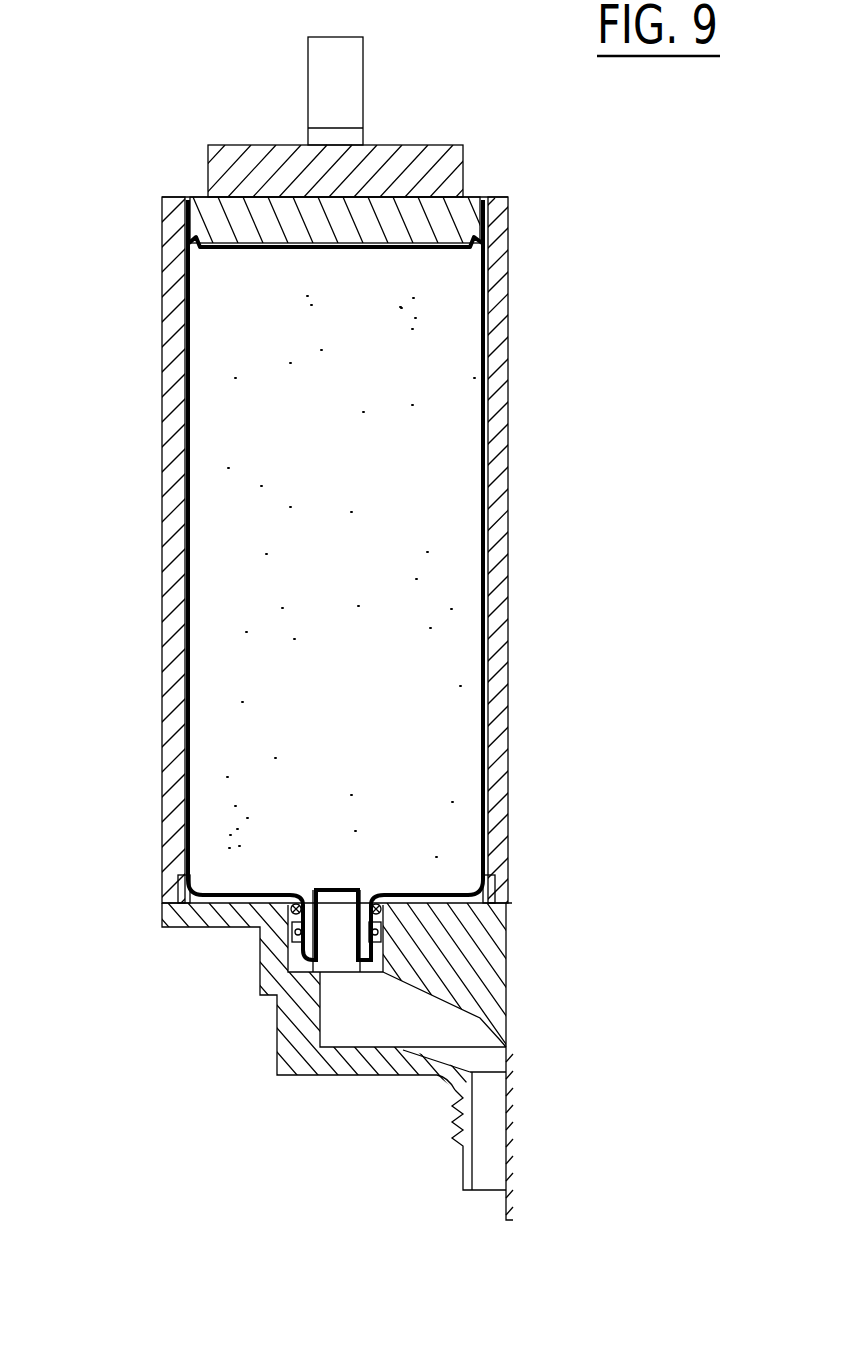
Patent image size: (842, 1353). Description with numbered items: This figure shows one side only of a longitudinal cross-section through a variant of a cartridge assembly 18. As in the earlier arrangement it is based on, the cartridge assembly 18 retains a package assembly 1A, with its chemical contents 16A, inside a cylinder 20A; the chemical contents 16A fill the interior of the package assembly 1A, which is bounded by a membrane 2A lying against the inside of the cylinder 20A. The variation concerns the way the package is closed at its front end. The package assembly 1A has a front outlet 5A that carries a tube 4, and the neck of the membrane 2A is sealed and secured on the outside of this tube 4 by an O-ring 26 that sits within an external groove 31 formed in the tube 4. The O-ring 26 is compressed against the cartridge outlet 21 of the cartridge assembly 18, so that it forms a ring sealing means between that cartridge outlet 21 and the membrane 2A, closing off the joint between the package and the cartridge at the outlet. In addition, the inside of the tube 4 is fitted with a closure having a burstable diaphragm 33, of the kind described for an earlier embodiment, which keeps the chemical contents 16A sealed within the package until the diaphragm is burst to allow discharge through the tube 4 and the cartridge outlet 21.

The package assembly 1A is at (176, 547).
The membrane 2A is at (186, 402).
The cylinder 20A is at (178, 738).
The chemical contents 16A is at (362, 468).
The front outlet 5A is at (168, 883).
The cartridge outlet 21 is at (298, 1018).
The cartridge assembly 18 is at (320, 1143).
The tube 4 is at (292, 892).
The burstable diaphragm 33 is at (322, 890).
The external groove 31 is at (373, 890).
The O-ring 26 is at (400, 900).